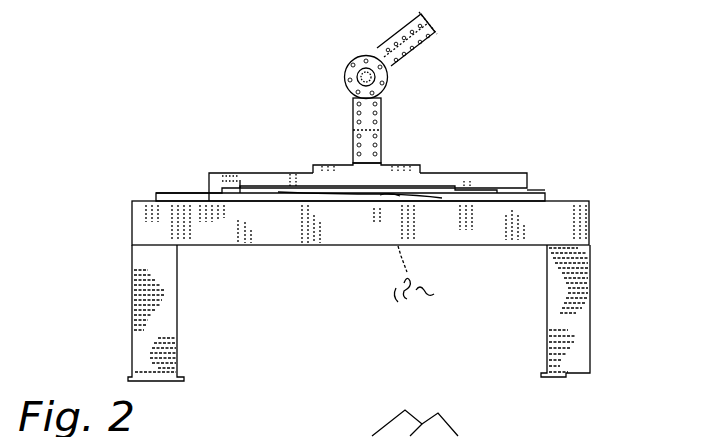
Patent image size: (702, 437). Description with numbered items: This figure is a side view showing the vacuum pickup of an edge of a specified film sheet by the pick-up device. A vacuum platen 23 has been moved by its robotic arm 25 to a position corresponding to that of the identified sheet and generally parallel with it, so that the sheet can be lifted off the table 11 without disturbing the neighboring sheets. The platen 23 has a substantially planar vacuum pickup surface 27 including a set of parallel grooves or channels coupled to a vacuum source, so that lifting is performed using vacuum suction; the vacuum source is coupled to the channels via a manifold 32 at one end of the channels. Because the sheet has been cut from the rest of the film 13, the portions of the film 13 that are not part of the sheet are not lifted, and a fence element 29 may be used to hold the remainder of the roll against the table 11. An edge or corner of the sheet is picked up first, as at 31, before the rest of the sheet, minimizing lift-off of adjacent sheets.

The table 11 is at (359, 291).
The film 13 is at (358, 181).
The vacuum platen 23 is at (368, 164).
The robotic arm 25 is at (384, 92).
The vacuum pickup surface 27 is at (226, 214).
The fence element 29 is at (383, 165).
The picked-up edge or corner of sheet 31 is at (360, 215).
The manifold 32 is at (427, 420).